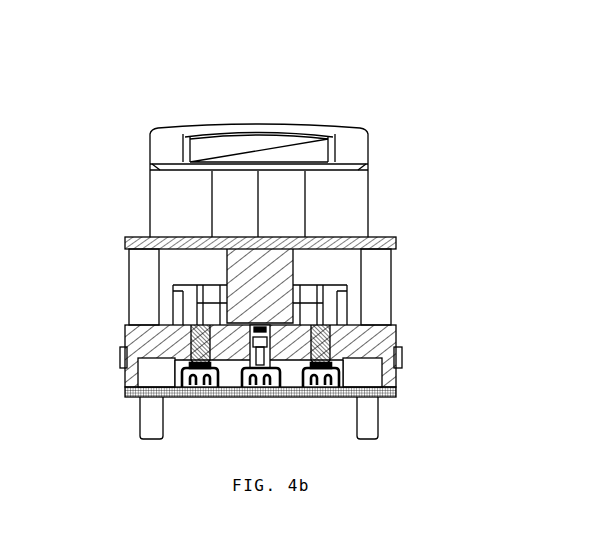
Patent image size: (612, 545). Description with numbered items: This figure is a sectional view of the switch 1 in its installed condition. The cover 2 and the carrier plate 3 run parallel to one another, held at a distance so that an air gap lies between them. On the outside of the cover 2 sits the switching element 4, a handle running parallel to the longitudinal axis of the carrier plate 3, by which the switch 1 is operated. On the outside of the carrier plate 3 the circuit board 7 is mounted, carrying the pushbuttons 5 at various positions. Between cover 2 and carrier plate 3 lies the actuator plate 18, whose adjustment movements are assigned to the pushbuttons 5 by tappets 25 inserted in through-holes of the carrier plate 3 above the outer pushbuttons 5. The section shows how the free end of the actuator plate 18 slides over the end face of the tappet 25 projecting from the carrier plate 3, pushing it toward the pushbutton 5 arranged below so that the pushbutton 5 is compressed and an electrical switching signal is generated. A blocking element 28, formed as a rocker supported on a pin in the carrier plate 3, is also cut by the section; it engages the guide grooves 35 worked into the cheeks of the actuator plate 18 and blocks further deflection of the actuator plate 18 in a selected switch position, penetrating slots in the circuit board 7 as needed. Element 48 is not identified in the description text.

The switch 1 is at (271, 235).
The cover 2 is at (299, 192).
The carrier plate 3 is at (236, 356).
The switching element 4 is at (260, 134).
The pushbutton 5 is at (144, 373).
The circuit board 7 is at (300, 413).
The actuator plate 18 is at (356, 212).
The tappet 25 is at (271, 308).
The blocking element 28 is at (142, 283).
The guide groove 35 is at (142, 265).
The guide element 48 is at (389, 273).